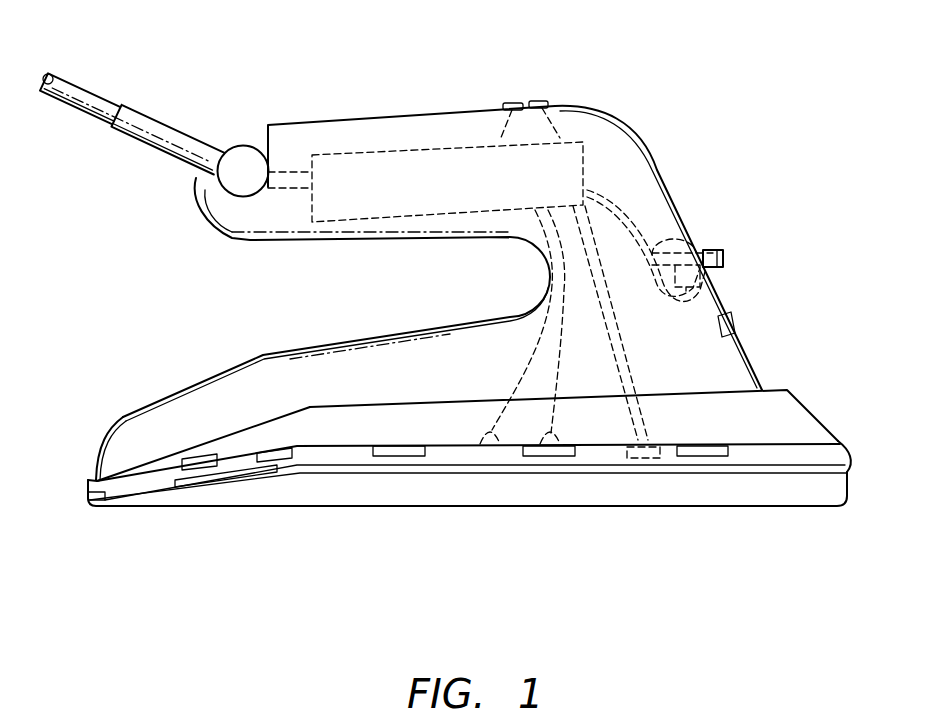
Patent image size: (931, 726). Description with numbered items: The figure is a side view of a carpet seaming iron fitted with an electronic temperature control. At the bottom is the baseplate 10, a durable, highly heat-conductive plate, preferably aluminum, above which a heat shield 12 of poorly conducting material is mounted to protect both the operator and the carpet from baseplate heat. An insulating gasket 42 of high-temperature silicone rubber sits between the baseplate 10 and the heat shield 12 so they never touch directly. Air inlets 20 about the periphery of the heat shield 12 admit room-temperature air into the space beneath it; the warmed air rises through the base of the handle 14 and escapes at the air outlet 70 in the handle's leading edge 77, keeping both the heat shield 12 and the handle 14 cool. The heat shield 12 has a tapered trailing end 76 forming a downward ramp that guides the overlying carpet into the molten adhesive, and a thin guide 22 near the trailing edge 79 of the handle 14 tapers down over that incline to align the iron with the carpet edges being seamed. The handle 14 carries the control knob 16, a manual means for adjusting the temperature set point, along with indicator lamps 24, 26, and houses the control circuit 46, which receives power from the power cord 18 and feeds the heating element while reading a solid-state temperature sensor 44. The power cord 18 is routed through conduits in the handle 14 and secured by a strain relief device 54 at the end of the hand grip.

The baseplate 10 is at (693, 493).
The heat shield 12 is at (803, 407).
The handle 14 is at (634, 163).
The control knob 16 is at (723, 262).
The power cord 18 is at (88, 88).
The air inlets 20 is at (548, 457).
The guide 22 is at (197, 397).
The indicator lamp 24 is at (510, 102).
The indicator lamp 26 is at (547, 102).
The insulating gasket 42 is at (850, 452).
The solid-state temperature sensor 44 is at (627, 450).
The control circuit 46 is at (390, 152).
The strain relief device 54 is at (244, 146).
The air outlet 70 is at (737, 320).
The tapered trailing end 76 is at (188, 448).
The leading edge 77 is at (668, 191).
The trailing edge 79 is at (93, 453).